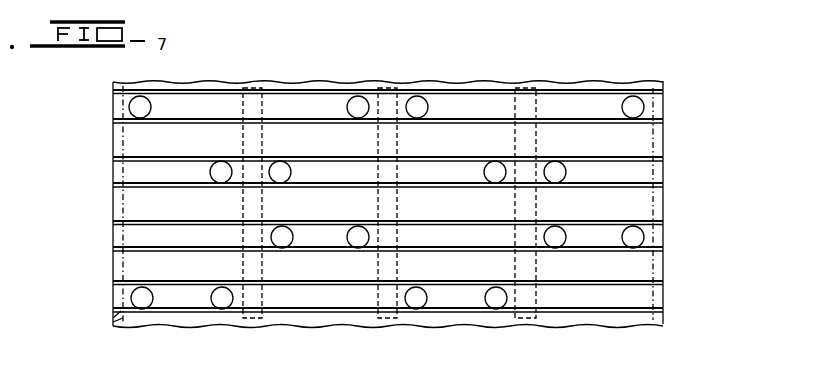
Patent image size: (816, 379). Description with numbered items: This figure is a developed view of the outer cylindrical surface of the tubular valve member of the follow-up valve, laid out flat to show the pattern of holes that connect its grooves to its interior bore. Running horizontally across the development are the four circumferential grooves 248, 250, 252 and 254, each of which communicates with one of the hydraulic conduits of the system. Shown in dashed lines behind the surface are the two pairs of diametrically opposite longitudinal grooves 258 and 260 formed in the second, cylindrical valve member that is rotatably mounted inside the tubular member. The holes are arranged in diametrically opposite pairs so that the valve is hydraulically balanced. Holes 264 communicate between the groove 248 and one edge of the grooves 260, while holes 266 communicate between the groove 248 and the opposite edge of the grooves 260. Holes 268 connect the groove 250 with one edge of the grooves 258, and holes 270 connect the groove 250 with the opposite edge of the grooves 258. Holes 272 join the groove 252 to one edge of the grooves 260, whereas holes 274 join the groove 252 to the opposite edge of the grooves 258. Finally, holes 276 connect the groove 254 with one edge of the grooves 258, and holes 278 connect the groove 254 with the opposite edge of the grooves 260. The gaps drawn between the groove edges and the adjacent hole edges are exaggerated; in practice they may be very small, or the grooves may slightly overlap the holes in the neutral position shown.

The circumferential groove 248 is at (656, 114).
The circumferential groove 250 is at (660, 172).
The circumferential groove 252 is at (657, 235).
The circumferential groove 254 is at (658, 296).
The longitudinal grooves 258 is at (250, 316).
The longitudinal grooves 260 is at (121, 319).
The holes 264 is at (356, 104).
The holes 266 is at (145, 105).
The holes 268 is at (220, 170).
The holes 270 is at (283, 170).
The holes 272 is at (358, 235).
The holes 274 is at (283, 236).
The holes 276 is at (222, 300).
The holes 278 is at (140, 300).